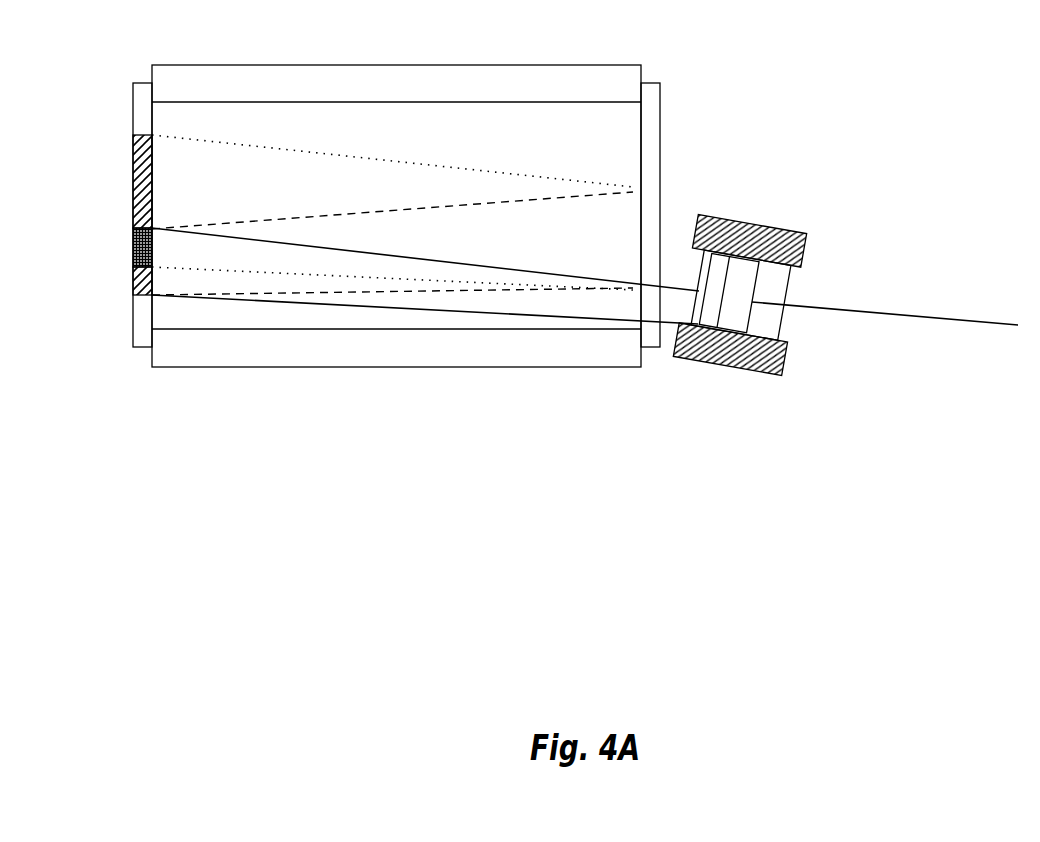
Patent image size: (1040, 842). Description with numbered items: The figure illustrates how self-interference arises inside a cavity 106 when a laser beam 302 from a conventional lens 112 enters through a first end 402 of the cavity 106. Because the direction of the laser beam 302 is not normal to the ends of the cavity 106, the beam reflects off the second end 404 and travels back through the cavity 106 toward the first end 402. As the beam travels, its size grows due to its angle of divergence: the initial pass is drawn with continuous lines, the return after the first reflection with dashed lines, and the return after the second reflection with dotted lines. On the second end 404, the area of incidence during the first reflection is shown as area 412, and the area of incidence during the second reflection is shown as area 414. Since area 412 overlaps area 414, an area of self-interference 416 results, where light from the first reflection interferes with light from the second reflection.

The cavity 106 is at (594, 146).
The second end 404 is at (133, 98).
The first end 402 is at (660, 135).
The area of incidence during the second reflection 414 is at (133, 192).
The area of self-interference 416 is at (133, 258).
The area of incidence during the first reflection 412 is at (133, 277).
The laser beam 302 is at (433, 310).
The conventional lens 112 is at (690, 355).